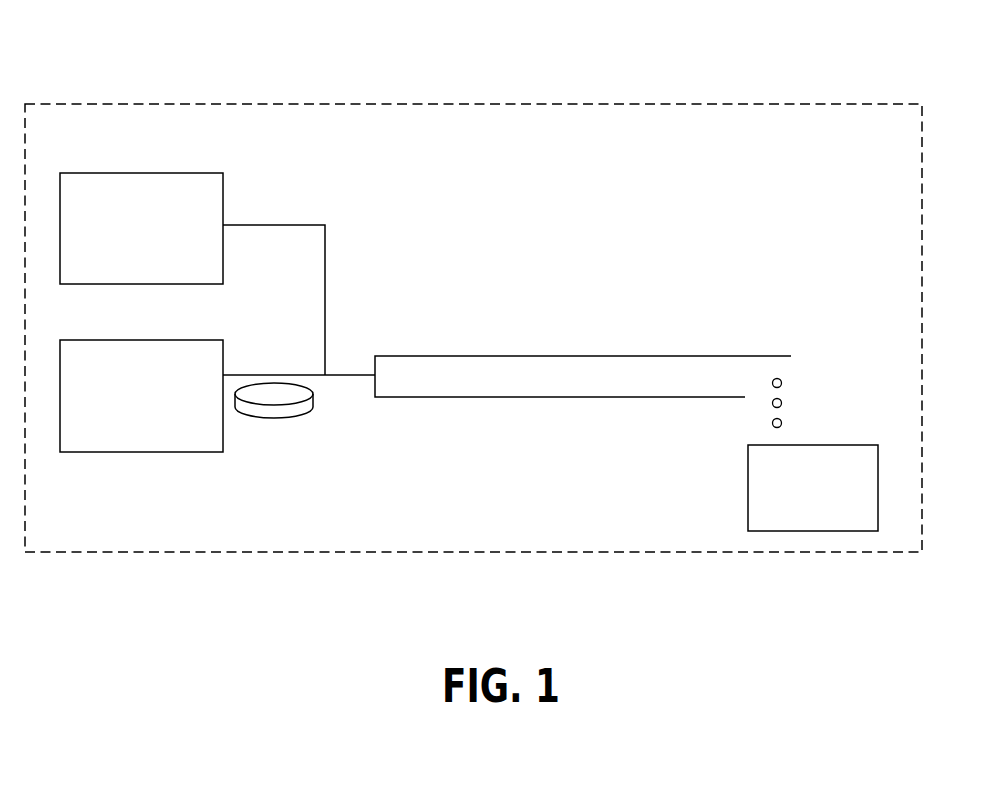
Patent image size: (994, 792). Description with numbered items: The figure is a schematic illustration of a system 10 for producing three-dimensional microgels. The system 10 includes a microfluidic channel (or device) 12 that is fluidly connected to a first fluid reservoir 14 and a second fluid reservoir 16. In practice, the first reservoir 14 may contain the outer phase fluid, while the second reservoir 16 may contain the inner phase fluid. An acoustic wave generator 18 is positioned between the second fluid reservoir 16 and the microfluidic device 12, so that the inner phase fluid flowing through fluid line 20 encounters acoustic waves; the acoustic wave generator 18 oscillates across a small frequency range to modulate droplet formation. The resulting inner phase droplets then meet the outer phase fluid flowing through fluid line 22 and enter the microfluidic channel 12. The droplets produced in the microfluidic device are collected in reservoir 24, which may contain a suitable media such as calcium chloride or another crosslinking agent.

The system 10 is at (311, 86).
The microfluidic channel 12 is at (607, 355).
The first fluid reservoir 14 is at (194, 172).
The second fluid reservoir 16 is at (194, 340).
The acoustic wave generator 18 is at (293, 415).
The fluid line 20 is at (260, 374).
The fluid line 22 is at (302, 224).
The reservoir 24 is at (843, 444).